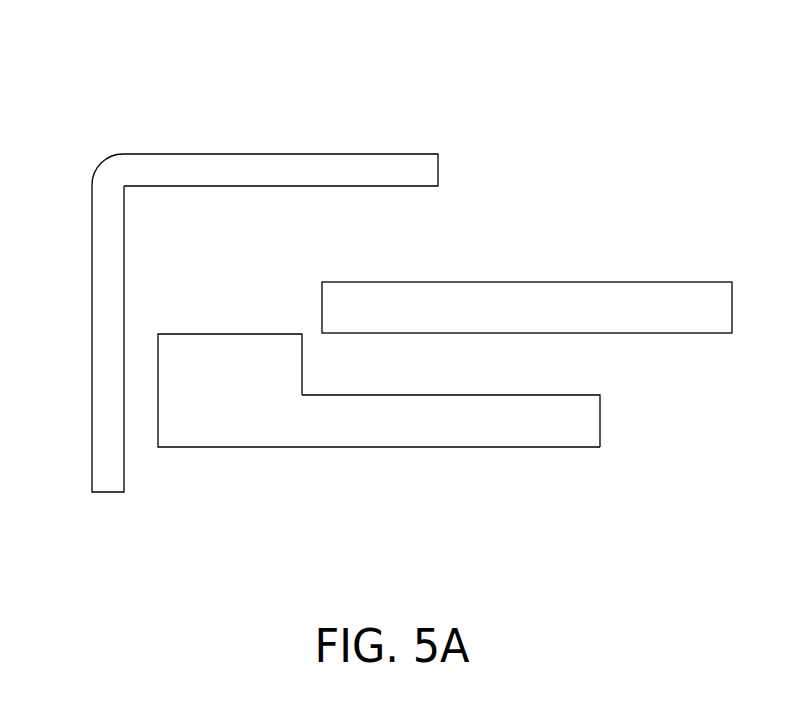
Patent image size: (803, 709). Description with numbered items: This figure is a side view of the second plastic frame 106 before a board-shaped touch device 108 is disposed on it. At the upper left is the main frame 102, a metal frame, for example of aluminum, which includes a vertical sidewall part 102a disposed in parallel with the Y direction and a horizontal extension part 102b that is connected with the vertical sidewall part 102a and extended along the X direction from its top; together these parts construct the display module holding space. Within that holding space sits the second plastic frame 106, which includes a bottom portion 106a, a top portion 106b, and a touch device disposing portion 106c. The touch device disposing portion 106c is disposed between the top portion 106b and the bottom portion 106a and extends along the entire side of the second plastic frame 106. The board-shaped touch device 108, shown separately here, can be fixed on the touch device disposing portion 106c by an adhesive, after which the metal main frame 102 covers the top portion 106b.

The main frame 102 is at (197, 71).
The vertical sidewall part 102a is at (102, 228).
The horizontal extension part 102b is at (188, 167).
The second frame 106 is at (470, 523).
The bottom portion 106a is at (348, 423).
The top portion 106b is at (255, 347).
The touch device disposing portion 106c is at (383, 395).
The touch device 108 is at (645, 302).